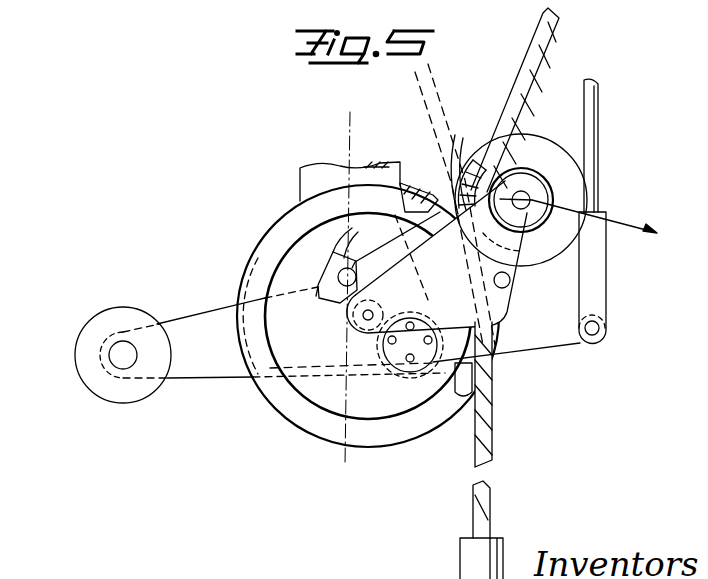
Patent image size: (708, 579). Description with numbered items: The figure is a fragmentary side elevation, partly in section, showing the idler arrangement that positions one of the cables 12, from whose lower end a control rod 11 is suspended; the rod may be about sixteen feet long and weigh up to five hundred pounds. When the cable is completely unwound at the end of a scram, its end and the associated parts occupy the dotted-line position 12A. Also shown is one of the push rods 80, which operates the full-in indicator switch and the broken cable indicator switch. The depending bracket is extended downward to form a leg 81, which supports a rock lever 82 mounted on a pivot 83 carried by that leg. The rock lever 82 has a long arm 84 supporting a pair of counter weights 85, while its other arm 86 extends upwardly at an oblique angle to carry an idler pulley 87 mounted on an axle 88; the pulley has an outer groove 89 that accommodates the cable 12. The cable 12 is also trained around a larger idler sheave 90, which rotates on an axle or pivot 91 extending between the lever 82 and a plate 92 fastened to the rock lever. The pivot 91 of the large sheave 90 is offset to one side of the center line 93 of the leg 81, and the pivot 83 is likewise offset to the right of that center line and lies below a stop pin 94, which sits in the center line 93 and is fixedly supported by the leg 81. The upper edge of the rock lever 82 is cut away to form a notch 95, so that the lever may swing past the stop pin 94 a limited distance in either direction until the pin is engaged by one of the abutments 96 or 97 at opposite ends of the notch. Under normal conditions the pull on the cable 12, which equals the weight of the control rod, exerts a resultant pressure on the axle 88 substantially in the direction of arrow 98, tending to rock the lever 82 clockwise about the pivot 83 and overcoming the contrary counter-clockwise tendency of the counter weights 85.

The control rod 11 is at (468, 550).
The cable 12 is at (533, 36).
The scram position of cable end 12A is at (431, 91).
The push rod 80 is at (598, 110).
The leg 81 is at (300, 176).
The rock lever 82 is at (530, 347).
The pivot 83 is at (405, 345).
The long arm 84 is at (183, 370).
The counter weights 85 is at (84, 352).
The other arm 86 is at (433, 190).
The idler pulley 87 is at (560, 184).
The axle 88 is at (526, 193).
The outer groove 89 is at (497, 147).
The larger idler sheave 90 is at (383, 412).
The axle or pivot 91 is at (364, 319).
The plate 92 is at (509, 301).
The center line 93 is at (347, 130).
The stop pin 94 is at (338, 272).
The notch 95 is at (318, 286).
The abutment 96 is at (357, 263).
The abutment 97 is at (333, 301).
The arrow 98 is at (640, 223).